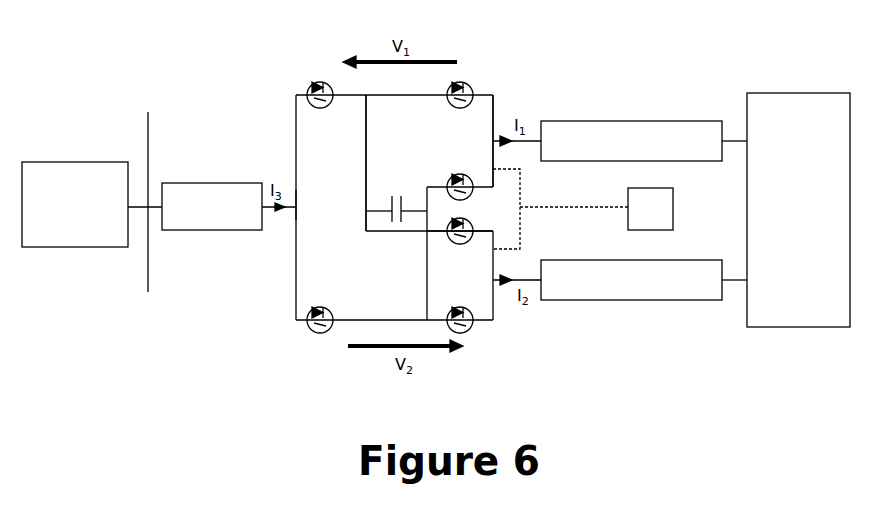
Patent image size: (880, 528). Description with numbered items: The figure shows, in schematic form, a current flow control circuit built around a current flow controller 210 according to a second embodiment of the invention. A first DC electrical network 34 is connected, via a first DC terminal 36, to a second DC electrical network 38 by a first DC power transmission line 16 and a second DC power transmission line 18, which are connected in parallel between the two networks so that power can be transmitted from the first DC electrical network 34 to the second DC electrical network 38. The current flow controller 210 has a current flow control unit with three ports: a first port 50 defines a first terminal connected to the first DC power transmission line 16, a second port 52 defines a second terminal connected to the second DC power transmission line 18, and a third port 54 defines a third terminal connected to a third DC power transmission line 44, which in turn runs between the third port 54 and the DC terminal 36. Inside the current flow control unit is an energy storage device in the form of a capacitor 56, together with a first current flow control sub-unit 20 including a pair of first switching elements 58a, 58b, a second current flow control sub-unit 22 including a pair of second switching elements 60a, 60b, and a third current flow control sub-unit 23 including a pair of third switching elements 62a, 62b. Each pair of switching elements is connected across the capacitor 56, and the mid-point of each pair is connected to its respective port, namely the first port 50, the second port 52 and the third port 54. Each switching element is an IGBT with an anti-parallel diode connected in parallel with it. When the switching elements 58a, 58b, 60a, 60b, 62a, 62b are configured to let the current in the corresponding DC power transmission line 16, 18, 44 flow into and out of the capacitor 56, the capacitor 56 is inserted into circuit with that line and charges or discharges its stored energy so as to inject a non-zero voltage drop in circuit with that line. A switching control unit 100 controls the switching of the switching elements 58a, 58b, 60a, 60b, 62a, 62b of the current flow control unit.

The first DC power transmission line 16 is at (631, 141).
The second DC power transmission line 18 is at (631, 280).
The first current flow control sub-unit 20 is at (443, 127).
The second current flow control sub-unit 22 is at (475, 280).
The third current flow control sub-unit 23 is at (317, 223).
The first DC electrical network 34 is at (75, 204).
The first DC terminal 36 is at (145, 191).
The second DC electrical network 38 is at (798, 210).
The third DC power transmission line 44 is at (212, 206).
The first port 50 is at (495, 135).
The second port 52 is at (493, 285).
The third port 54 is at (295, 203).
The capacitor 56 is at (393, 193).
The first switching element 58a is at (448, 84).
The first switching element 58b is at (445, 164).
The second switching element 60a is at (456, 242).
The second switching element 60b is at (457, 312).
The third switching element 62a is at (325, 98).
The third switching element 62b is at (317, 309).
The switching control unit 100 is at (583, 209).
The current flow controller 210 is at (498, 90).